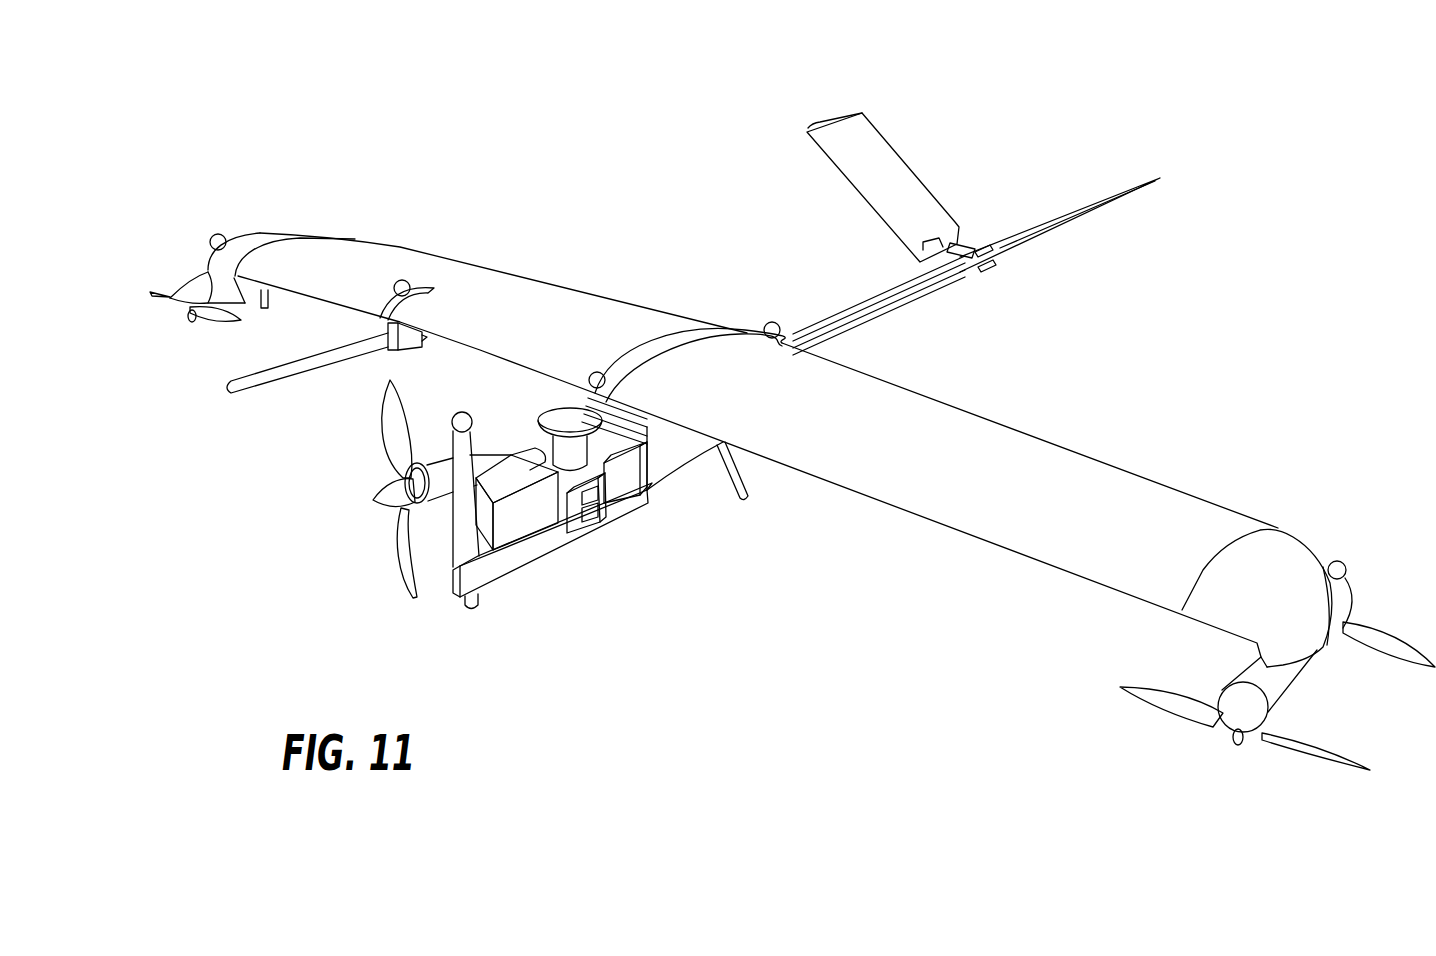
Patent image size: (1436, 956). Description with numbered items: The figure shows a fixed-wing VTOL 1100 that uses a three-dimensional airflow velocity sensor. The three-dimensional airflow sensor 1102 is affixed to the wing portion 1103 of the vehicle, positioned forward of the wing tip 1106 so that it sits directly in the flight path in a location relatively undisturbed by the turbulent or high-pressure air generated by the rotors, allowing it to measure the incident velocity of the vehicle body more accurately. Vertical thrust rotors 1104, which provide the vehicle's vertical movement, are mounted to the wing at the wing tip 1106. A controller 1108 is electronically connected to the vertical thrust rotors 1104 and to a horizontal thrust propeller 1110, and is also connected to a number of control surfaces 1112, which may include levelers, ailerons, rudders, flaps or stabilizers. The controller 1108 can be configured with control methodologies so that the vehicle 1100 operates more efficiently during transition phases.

The fixed-wing VTOL 1100 is at (193, 201).
The three-dimensional airflow sensor 1102 is at (233, 388).
The wing portion 1103 is at (332, 283).
The vertical thrust rotors 1104 is at (1187, 713).
The wing tip 1106 is at (1278, 572).
The controller 1108 is at (623, 488).
The horizontal thrust propeller 1110 is at (393, 445).
The control surfaces 1112 is at (908, 198).